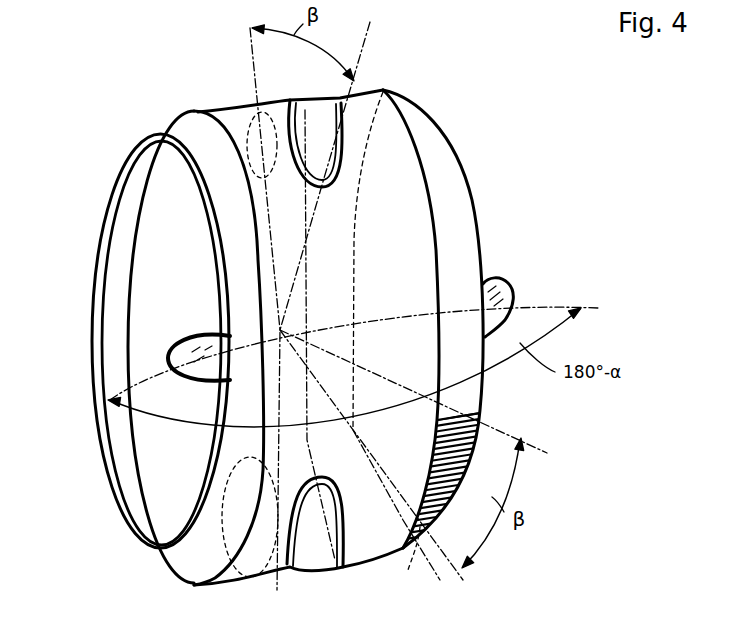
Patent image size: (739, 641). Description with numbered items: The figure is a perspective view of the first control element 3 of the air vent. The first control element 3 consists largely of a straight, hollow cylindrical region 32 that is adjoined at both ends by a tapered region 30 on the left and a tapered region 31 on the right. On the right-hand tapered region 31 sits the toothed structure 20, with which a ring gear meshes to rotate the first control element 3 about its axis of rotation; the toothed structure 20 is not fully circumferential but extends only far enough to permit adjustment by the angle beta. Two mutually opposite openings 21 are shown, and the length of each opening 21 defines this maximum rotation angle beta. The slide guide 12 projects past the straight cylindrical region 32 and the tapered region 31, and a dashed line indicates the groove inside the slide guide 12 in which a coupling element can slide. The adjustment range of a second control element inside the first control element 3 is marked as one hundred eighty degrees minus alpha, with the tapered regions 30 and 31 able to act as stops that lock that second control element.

The first control element 3 is at (408, 77).
The slide guide 12 is at (507, 279).
The toothed structure 20 is at (416, 545).
The opening 21 is at (305, 593).
The tapered region 30 is at (118, 178).
The tapered region 31 is at (462, 160).
The straight hollow cylindrical region 32 is at (227, 117).